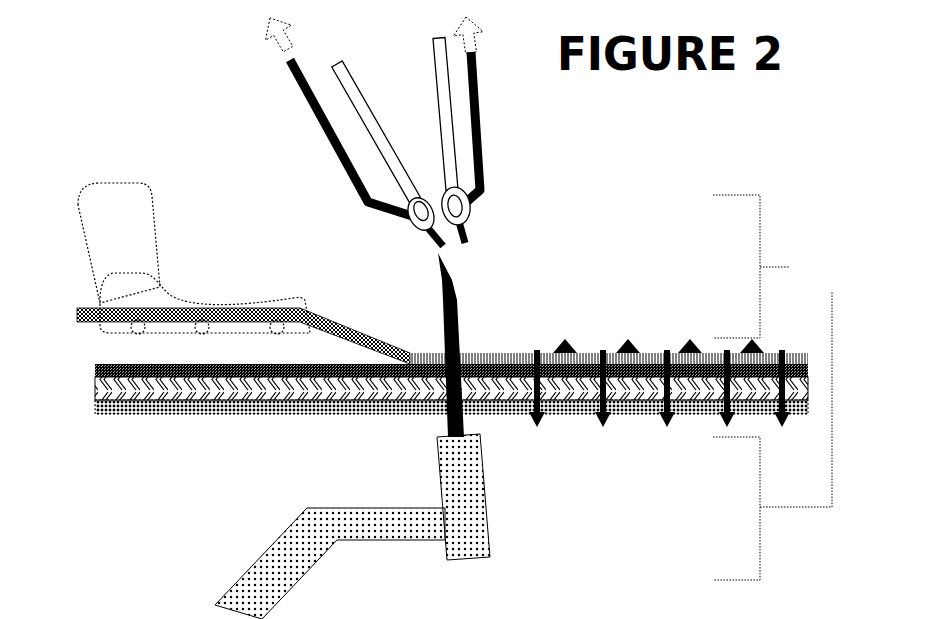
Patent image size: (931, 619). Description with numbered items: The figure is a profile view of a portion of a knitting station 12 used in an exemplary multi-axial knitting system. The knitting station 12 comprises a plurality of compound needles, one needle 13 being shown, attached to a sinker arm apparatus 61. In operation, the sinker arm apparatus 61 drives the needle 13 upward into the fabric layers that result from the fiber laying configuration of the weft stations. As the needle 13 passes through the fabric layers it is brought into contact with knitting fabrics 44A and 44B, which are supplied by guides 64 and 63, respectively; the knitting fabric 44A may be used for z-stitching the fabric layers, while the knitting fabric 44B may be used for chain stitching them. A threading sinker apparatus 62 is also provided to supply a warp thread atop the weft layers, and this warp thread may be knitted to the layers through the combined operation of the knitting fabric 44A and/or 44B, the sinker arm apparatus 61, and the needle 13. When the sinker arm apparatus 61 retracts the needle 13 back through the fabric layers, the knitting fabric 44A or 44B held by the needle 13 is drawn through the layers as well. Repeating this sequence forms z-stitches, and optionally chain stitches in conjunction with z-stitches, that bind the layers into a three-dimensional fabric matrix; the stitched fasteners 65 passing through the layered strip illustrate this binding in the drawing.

The knitting station 12 is at (467, 312).
The compound needle 13 is at (450, 307).
The knitting fabric 44A is at (327, 128).
The knitting fabric 44B is at (483, 123).
The sinker arm apparatus 61 is at (463, 497).
The threading sinker apparatus 62 is at (194, 258).
The guide 63 is at (437, 133).
The guide 64 is at (415, 223).
The staples / fasteners 65 is at (592, 350).